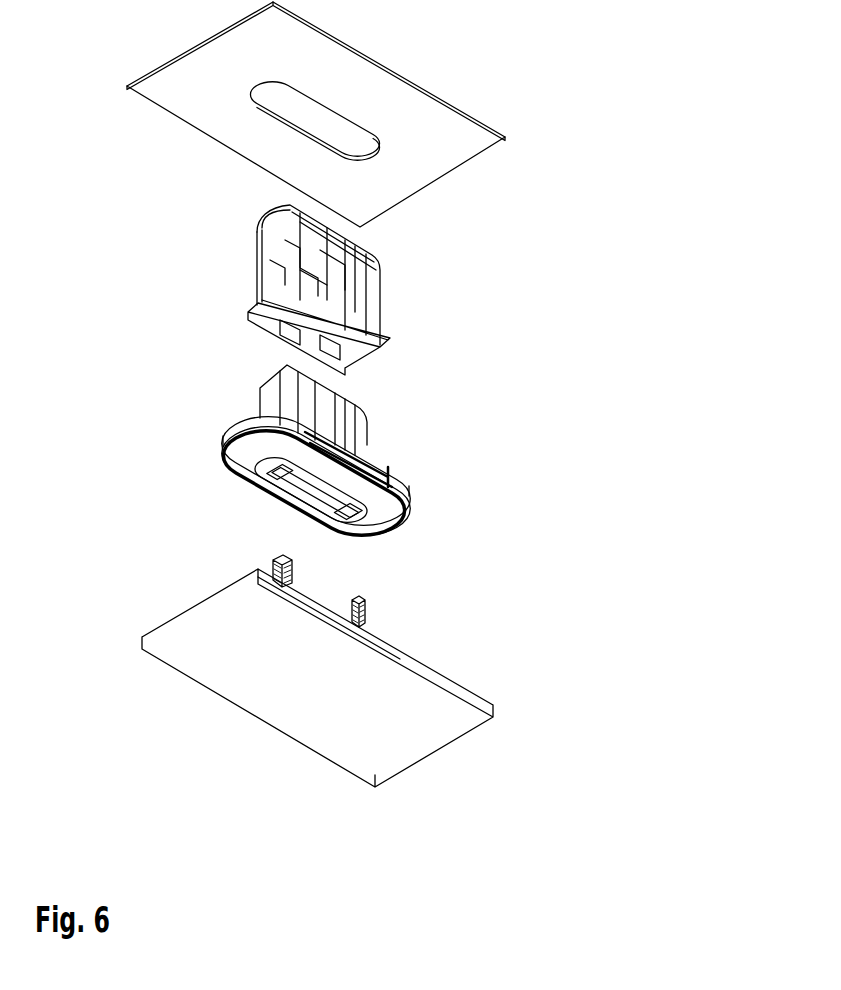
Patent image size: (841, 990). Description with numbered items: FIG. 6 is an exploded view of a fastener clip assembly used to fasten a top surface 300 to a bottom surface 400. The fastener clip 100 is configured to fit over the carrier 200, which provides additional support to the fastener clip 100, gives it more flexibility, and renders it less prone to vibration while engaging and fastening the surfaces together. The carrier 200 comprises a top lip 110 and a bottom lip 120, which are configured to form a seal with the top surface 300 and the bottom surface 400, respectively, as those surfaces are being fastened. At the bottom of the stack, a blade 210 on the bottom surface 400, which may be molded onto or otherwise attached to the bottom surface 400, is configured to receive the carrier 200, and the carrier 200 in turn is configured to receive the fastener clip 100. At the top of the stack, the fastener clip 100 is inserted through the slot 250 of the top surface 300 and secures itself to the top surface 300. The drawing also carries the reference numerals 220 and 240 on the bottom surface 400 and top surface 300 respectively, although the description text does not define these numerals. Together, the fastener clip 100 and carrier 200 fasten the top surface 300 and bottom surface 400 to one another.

The fastener clip 100 is at (515, 277).
The top lip 110 is at (228, 436).
The bottom lip 120 is at (402, 516).
The carrier 200 is at (562, 445).
The blade 210 is at (340, 605).
The base plate 220 is at (387, 732).
The cover plate 240 is at (405, 147).
The slot 250 is at (333, 108).
The top surface 300 is at (603, 113).
The bottom surface 400 is at (640, 608).